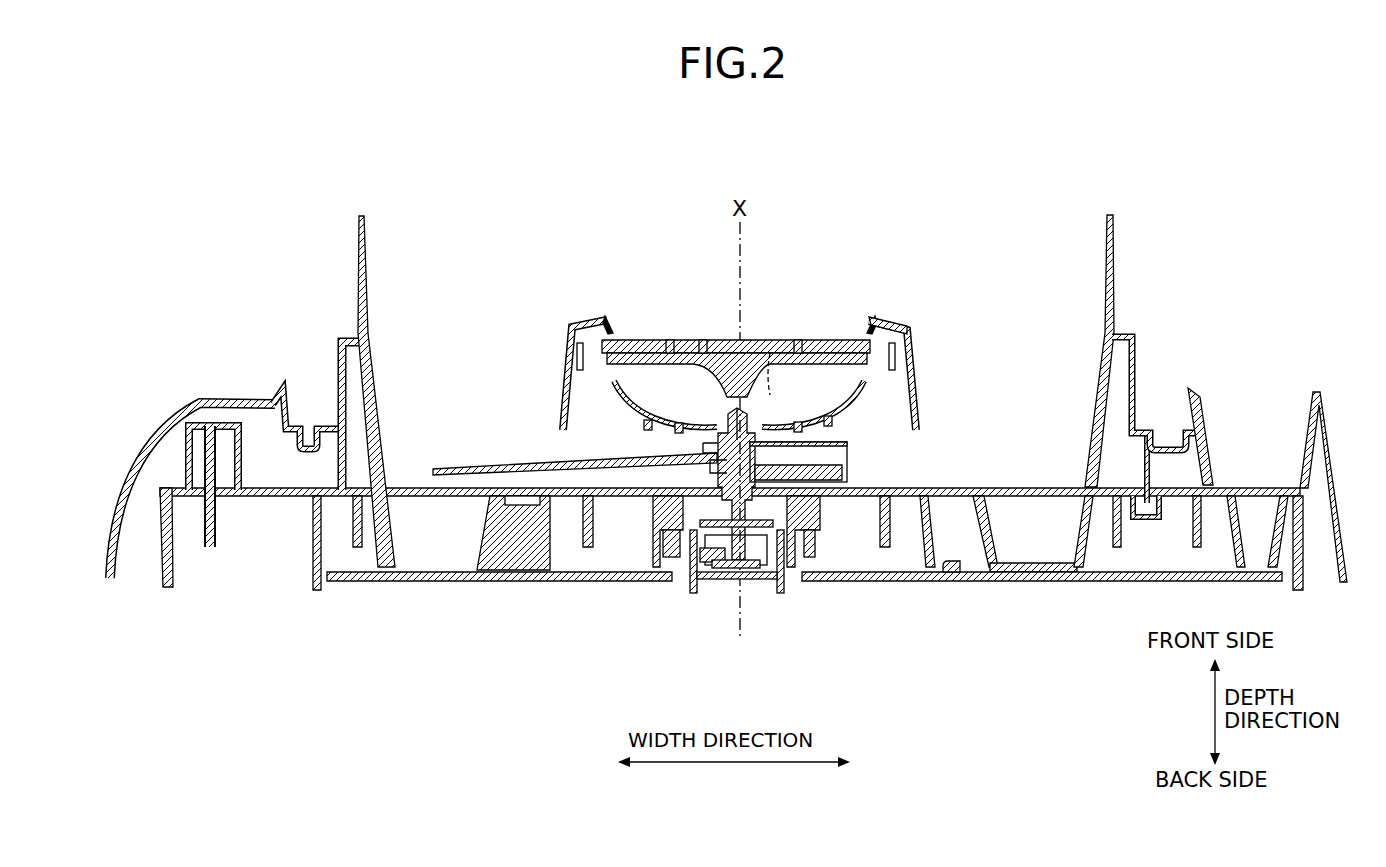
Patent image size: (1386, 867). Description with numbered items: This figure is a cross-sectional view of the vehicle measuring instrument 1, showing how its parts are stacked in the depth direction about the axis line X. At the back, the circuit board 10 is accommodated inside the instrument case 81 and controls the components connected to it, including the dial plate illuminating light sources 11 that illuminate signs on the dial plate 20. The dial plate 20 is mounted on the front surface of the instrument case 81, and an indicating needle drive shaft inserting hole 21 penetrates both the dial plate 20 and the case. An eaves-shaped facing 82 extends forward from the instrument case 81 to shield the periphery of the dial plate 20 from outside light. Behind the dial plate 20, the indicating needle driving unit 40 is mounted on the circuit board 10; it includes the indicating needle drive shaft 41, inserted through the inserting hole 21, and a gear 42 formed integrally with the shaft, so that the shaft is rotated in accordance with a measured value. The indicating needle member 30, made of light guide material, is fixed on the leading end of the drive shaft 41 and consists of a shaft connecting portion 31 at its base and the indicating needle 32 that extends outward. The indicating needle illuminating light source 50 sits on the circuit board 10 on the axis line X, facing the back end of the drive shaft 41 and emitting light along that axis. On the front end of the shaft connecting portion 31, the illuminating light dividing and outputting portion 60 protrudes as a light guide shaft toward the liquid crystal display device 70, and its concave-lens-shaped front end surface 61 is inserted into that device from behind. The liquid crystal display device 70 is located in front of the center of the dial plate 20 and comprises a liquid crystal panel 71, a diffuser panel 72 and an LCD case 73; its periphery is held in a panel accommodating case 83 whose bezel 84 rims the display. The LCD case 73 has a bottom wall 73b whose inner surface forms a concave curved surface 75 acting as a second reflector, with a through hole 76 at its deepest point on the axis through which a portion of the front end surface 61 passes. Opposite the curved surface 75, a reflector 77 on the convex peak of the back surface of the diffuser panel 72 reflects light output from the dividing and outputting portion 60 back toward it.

The vehicle measuring instrument 1 is at (232, 186).
The circuit board 10 is at (857, 582).
The dial plate illuminating light source 11 is at (950, 573).
The dial plate 20 is at (967, 487).
The indicating needle drive shaft inserting hole 21 is at (788, 503).
The indicating needle member 30 is at (671, 479).
The shaft connecting portion 31 is at (752, 479).
The indicating needle 32 is at (523, 457).
The indicating needle driving unit 40 is at (663, 590).
The indicating needle drive shaft 41 is at (727, 505).
The gear 42 is at (710, 548).
The indicating needle illuminating light source 50 is at (730, 557).
The illuminating light dividing and outputting portion 60 is at (756, 457).
The front end surface 61 is at (725, 350).
The liquid crystal display device 70 is at (735, 328).
The liquid crystal panel 71 is at (676, 350).
The diffuser panel 72 is at (655, 352).
The LCD case 73 is at (625, 408).
The bottom wall 73b is at (663, 418).
The curved surface 75 is at (672, 350).
The through hole 76 is at (703, 350).
The reflector 77 is at (770, 353).
The instrument case 81 is at (1088, 548).
The facing 82 is at (1103, 247).
The panel accommodating case 83 is at (908, 365).
The bezel 84 is at (856, 337).